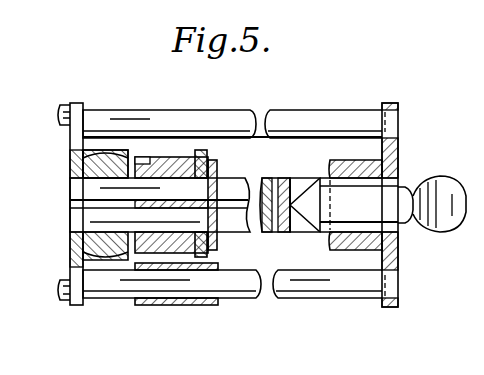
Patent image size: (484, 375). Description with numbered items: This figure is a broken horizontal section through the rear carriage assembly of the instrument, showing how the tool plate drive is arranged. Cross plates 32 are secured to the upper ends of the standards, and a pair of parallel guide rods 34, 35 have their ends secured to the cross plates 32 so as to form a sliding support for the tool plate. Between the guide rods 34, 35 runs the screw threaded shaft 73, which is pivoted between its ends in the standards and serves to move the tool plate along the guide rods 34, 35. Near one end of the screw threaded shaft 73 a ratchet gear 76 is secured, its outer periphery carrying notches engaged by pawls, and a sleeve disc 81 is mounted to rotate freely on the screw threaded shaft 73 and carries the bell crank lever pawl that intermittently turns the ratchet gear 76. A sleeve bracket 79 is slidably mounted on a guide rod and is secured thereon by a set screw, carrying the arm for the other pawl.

The cross plate 32 is at (70, 152).
The guide rod 34 is at (140, 110).
The guide rod 35 is at (118, 299).
The screw threaded shaft 73 is at (70, 190).
The ratchet gear 76 is at (195, 157).
The sleeve bracket 79 is at (150, 305).
The sleeve disc 81 is at (210, 252).